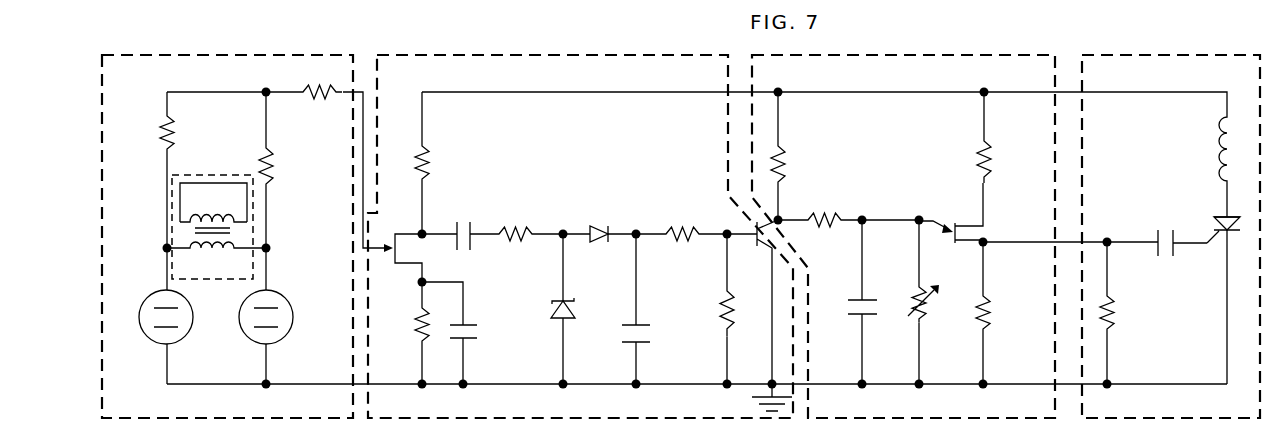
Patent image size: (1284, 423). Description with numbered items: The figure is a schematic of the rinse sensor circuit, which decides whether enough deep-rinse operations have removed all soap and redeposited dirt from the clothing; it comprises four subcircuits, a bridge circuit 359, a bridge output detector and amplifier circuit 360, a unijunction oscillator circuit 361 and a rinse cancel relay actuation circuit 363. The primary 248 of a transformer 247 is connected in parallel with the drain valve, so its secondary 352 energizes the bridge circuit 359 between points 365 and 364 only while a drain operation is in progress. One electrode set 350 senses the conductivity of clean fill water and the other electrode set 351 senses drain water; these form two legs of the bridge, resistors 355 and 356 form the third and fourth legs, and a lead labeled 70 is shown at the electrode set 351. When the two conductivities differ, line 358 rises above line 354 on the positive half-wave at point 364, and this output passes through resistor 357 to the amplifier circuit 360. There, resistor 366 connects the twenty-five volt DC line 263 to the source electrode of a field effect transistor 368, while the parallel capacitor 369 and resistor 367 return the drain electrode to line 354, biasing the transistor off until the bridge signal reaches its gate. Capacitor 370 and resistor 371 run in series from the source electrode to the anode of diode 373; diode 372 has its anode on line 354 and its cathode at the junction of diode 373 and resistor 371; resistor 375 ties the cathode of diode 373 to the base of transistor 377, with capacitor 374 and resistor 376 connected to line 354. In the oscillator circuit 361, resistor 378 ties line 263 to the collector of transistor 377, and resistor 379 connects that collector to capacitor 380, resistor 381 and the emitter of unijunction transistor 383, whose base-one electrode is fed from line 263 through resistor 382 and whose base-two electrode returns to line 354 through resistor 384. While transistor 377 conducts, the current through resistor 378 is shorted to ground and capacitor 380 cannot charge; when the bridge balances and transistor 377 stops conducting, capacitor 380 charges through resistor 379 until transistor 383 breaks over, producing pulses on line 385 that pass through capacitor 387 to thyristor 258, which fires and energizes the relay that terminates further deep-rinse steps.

The bridge circuit 359 is at (225, 55).
The bridge output detector and amplifier circuit 360 is at (515, 55).
The unijunction oscillator circuit 361 is at (895, 55).
The rinse cancel relay actuation circuit 363 is at (1138, 55).
The line 358 is at (186, 92).
The resistor 357 is at (318, 104).
The resistor 356 is at (144, 170).
The resistor 355 is at (287, 168).
The transformer 247 is at (180, 175).
The primary 248 is at (213, 201).
The point 365 is at (141, 248).
The point 364 is at (288, 248).
The secondary 352 is at (216, 260).
The conductor 70 is at (270, 290).
The sensor electrode set 350 is at (180, 340).
The sensor electrode set 351 is at (276, 340).
The line 354 is at (186, 389).
The resistor 366 is at (443, 163).
The field effect transistor 368 is at (408, 258).
The capacitor 370 is at (472, 245).
The resistor 371 is at (497, 226).
The diode 373 is at (585, 226).
The diode 372 is at (572, 302).
The resistor 367 is at (402, 335).
The capacitor 369 is at (472, 340).
The resistor 375 is at (663, 226).
The capacitor 374 is at (644, 343).
The resistor 376 is at (722, 305).
The transistor 377 is at (759, 315).
The resistor 378 is at (801, 156).
The resistor 379 is at (805, 215).
The capacitor 380 is at (876, 318).
The resistor 381 is at (925, 285).
The unijunction transistor 383 is at (953, 235).
The resistor 382 is at (961, 136).
The resistor 384 is at (968, 322).
The line 385 is at (1000, 242).
The line 263 is at (840, 92).
The thyristor 258 is at (1215, 217).
The capacitor 387 is at (1162, 258).